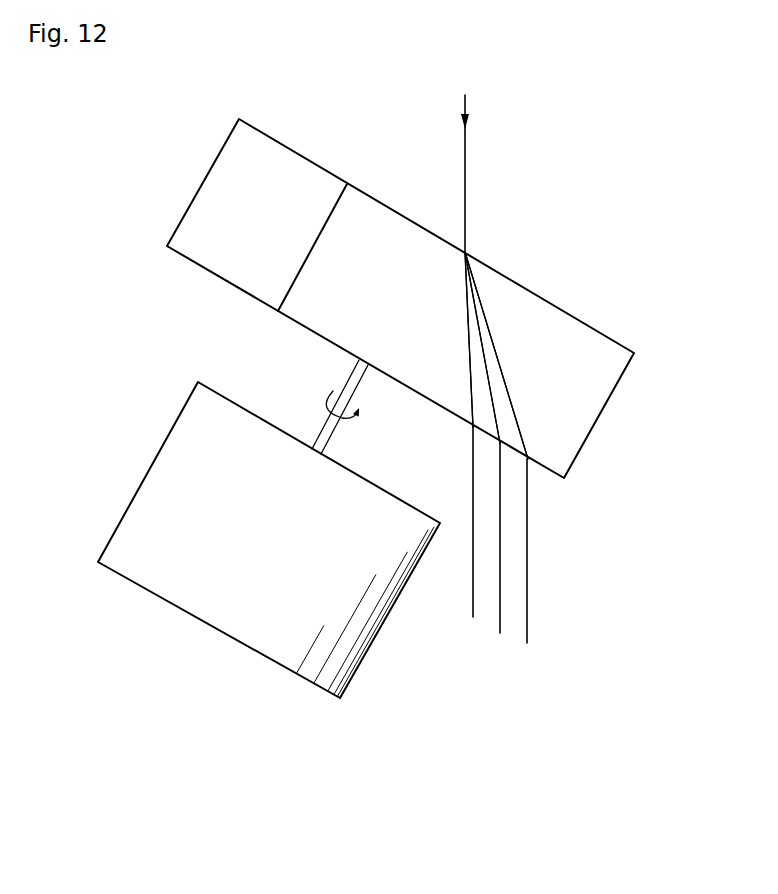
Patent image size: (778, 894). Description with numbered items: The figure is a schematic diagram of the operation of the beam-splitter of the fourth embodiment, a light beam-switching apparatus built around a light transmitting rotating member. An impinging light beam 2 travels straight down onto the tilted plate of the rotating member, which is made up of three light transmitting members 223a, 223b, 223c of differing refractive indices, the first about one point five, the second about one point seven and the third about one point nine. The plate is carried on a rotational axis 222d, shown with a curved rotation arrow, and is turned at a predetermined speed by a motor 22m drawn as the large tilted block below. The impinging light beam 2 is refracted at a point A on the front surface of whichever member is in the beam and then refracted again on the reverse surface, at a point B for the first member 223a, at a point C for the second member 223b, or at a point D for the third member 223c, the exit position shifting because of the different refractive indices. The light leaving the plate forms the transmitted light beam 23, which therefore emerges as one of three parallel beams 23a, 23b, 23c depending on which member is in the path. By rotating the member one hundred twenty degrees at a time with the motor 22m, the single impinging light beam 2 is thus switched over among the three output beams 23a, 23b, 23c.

The impinging light beam 2 is at (465, 103).
The light transmitting member 223a is at (635, 352).
The light transmitting member 223b is at (716, 392).
The light transmitting member 223c is at (437, 298).
The rotation shaft 222d is at (455, 417).
The motor 22m is at (131, 533).
The beam 23a is at (480, 557).
The beam 23b is at (511, 552).
The beam 23c is at (530, 573).
The transmitted light beam 23 is at (505, 575).
The point A is at (467, 251).
The point B is at (473, 427).
The point C is at (500, 444).
The point D is at (528, 462).